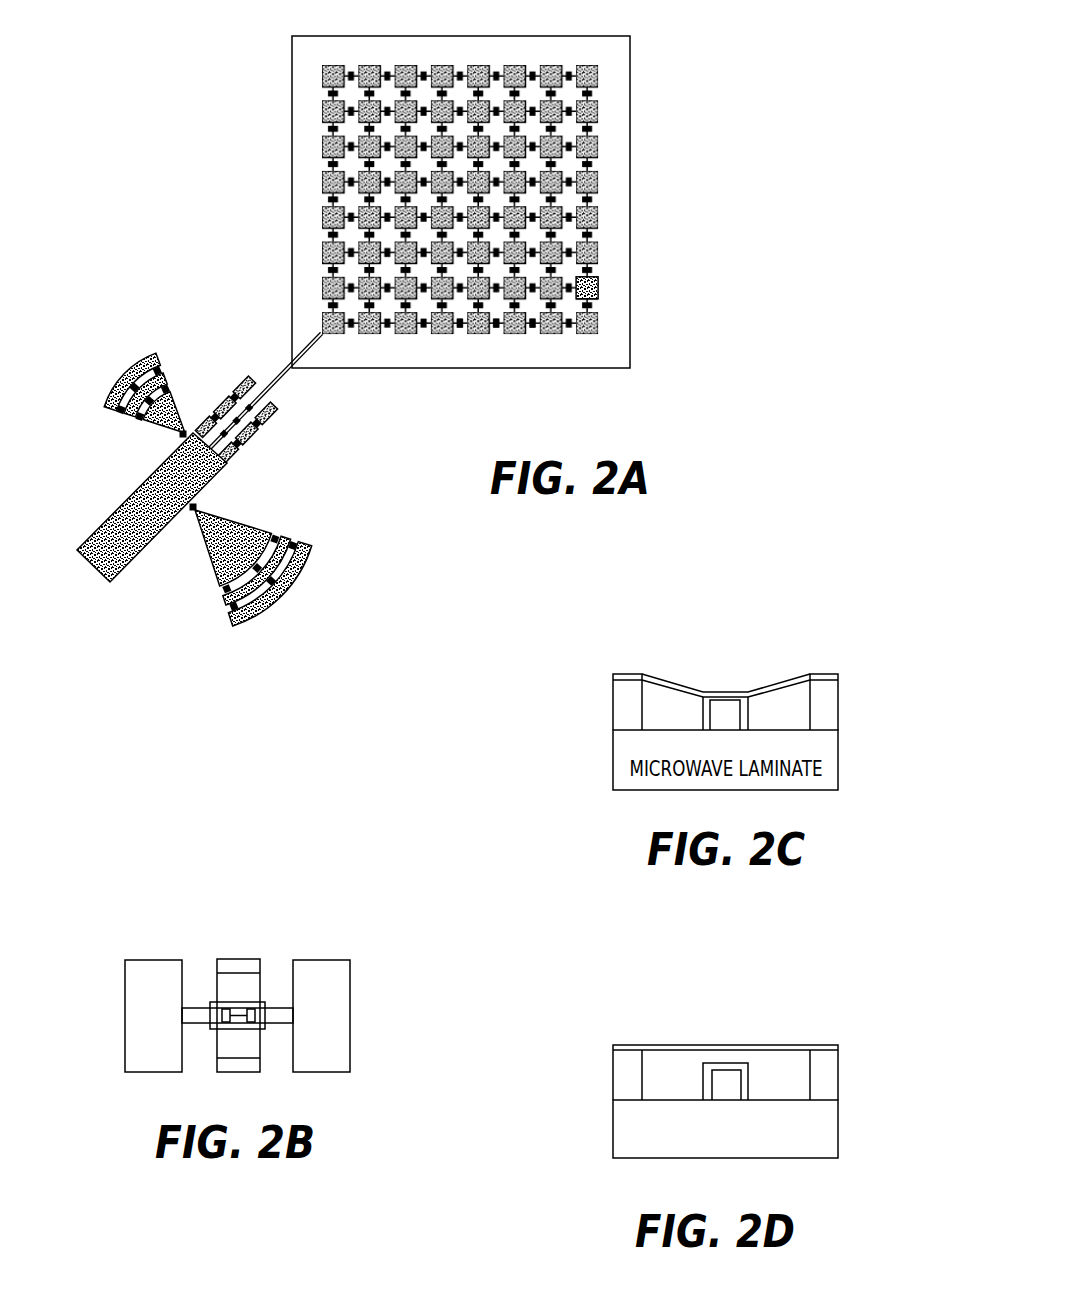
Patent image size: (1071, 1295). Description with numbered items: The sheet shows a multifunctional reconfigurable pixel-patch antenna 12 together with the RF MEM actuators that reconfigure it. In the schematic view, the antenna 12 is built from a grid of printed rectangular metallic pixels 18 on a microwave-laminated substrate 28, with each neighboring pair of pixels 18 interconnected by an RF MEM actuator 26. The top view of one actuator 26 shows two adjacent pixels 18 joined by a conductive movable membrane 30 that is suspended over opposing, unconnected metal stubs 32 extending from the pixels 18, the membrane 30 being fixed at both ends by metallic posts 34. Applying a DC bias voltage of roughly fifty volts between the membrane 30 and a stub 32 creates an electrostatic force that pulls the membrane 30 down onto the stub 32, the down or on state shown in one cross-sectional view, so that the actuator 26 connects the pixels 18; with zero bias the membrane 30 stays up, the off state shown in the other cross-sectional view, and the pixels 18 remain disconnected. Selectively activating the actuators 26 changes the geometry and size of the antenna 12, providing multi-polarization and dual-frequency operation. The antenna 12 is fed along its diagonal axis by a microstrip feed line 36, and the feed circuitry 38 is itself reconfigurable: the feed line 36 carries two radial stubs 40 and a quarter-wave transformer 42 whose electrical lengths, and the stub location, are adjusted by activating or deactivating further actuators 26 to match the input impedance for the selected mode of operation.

In FIG. 2A, the antenna 12 is at (561, 199).
In FIG. 2A, the metallic pixels 18 is at (600, 286).
In FIG. 2B, the metallic pixels 18 is at (128, 1000).
In FIG. 2C, the metallic pixels 18 is at (612, 713).
In FIG. 2D, the metallic pixels 18 is at (612, 1075).
In FIG. 2A, the RF MEM actuator 26 is at (534, 336).
In FIG. 2B, the RF MEM actuator 26 is at (261, 950).
In FIG. 2A, the microwave-laminated substrate 28 is at (622, 58).
In FIG. 2B, the movable membrane 30 is at (253, 1040).
In FIG. 2C, the movable membrane 30 is at (778, 683).
In FIG. 2D, the movable membrane 30 is at (763, 1047).
In FIG. 2B, the stubs 32 is at (285, 1010).
In FIG. 2C, the stubs 32 is at (718, 706).
In FIG. 2D, the stubs 32 is at (715, 1073).
In FIG. 2B, the metallic posts 34 is at (222, 963).
In FIG. 2A, the microstrip feed line 36 is at (293, 368).
In FIG. 2A, the feed circuitry 38 is at (253, 488).
In FIG. 2A, the radial stubs 40 is at (120, 427).
In FIG. 2A, the quarter-wave transformer 42 is at (217, 400).